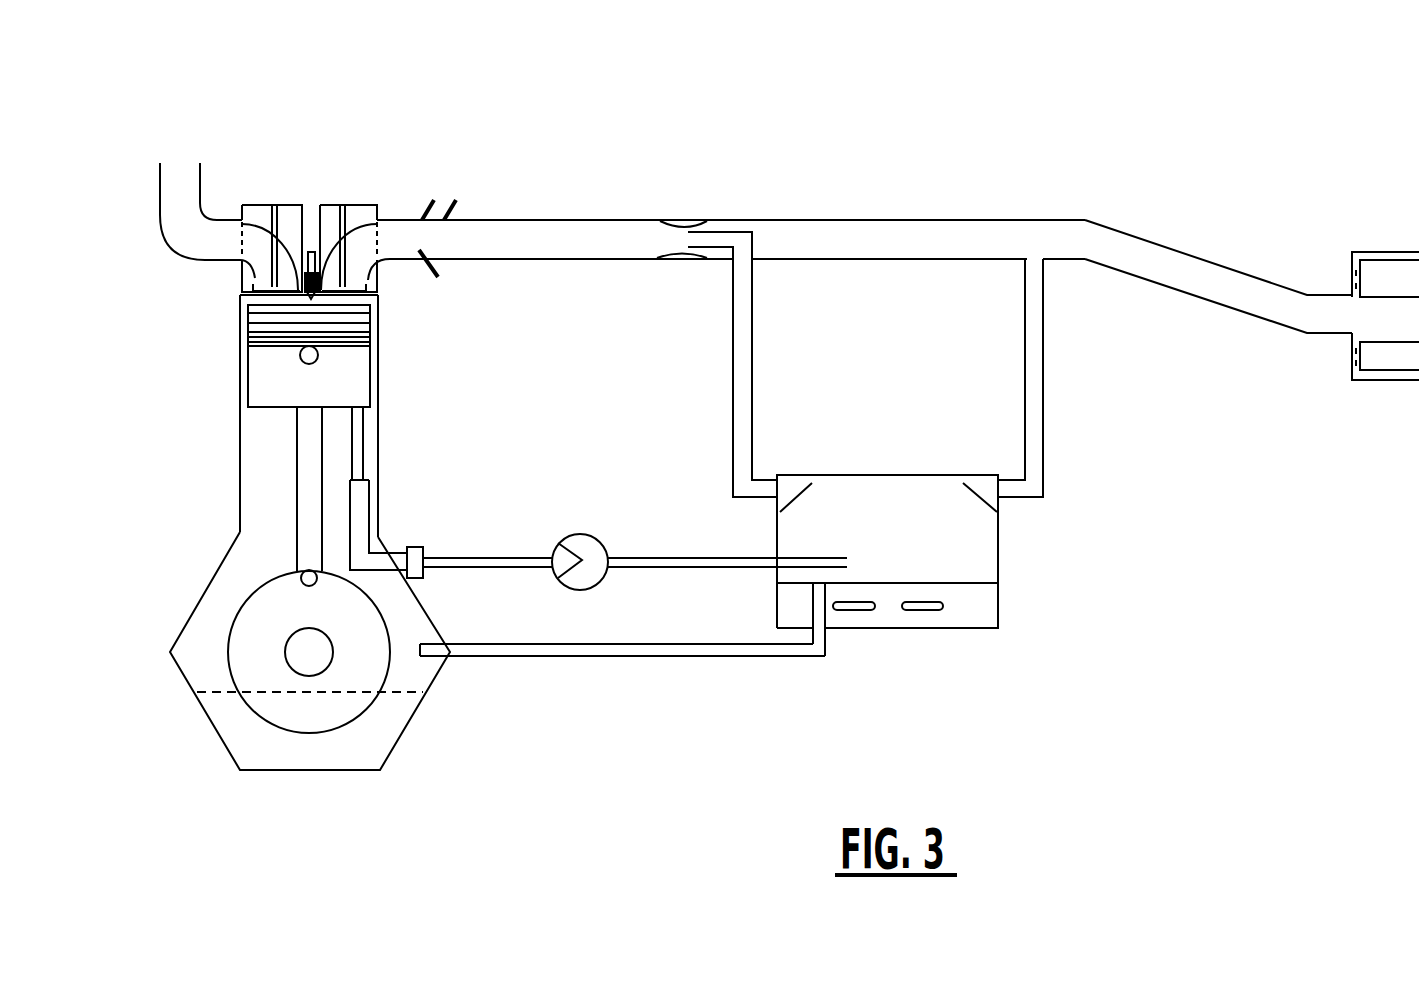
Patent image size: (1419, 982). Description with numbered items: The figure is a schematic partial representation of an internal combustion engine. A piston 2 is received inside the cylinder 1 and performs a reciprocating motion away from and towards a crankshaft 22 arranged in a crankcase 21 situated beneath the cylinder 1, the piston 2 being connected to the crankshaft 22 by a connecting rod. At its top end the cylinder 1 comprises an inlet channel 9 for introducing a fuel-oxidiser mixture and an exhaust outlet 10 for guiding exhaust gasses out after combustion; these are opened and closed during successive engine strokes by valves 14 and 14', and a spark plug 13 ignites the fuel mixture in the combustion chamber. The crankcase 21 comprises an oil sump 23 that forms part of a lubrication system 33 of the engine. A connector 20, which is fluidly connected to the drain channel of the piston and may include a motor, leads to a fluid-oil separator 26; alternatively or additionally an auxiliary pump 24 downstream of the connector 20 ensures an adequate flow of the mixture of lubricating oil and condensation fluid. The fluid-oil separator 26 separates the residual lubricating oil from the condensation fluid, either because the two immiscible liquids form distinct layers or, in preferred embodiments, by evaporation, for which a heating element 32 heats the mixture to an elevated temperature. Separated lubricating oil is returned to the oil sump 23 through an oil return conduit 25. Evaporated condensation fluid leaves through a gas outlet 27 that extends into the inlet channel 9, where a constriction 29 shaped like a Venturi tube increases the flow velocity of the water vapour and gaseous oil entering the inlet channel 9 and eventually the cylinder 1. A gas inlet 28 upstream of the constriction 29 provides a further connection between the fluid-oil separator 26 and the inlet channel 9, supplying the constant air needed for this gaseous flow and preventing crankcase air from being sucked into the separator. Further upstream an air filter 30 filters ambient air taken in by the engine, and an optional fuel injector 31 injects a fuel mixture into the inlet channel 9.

The cylinder 1 is at (242, 432).
The piston 2 is at (355, 373).
The inlet channel 9 is at (523, 235).
The exhaust outlet 10 is at (178, 200).
The spark plug 13 is at (309, 250).
The valve 14 is at (398, 305).
The valve 14' is at (221, 303).
The connector 20 is at (377, 558).
The crankcase 21 is at (203, 602).
The crankshaft 22 is at (303, 655).
The oil sump 23 is at (377, 735).
The auxiliary pump 24 is at (583, 548).
The oil return conduit 25 is at (660, 645).
The fluid-oil separator 26 is at (987, 547).
The gas outlet 27 is at (743, 347).
The gas inlet 28 is at (1033, 385).
The constriction 29 is at (690, 220).
The air filter 30 is at (1288, 192).
The fuel injector 31 is at (428, 200).
The heating element 32 is at (928, 607).
The lubrication system 33 is at (690, 688).